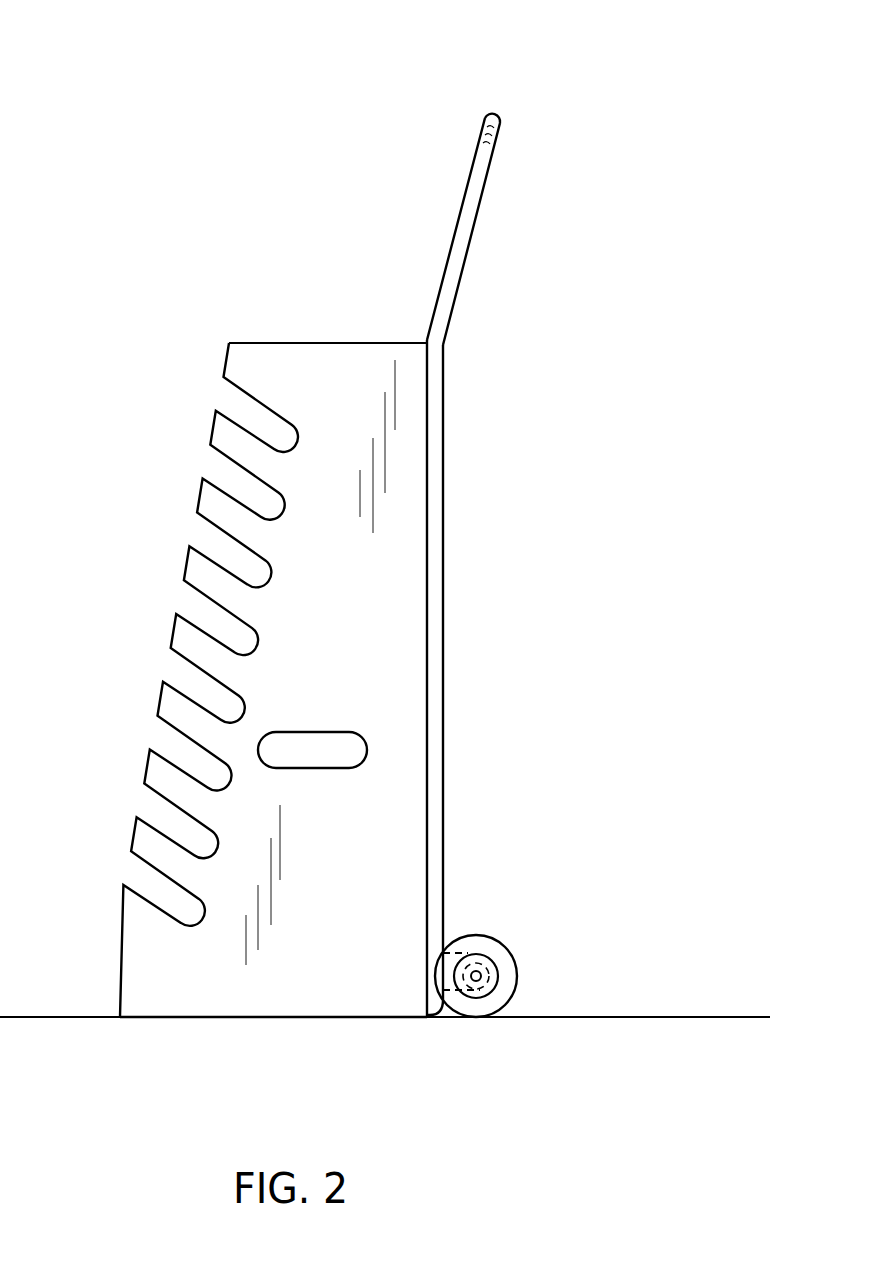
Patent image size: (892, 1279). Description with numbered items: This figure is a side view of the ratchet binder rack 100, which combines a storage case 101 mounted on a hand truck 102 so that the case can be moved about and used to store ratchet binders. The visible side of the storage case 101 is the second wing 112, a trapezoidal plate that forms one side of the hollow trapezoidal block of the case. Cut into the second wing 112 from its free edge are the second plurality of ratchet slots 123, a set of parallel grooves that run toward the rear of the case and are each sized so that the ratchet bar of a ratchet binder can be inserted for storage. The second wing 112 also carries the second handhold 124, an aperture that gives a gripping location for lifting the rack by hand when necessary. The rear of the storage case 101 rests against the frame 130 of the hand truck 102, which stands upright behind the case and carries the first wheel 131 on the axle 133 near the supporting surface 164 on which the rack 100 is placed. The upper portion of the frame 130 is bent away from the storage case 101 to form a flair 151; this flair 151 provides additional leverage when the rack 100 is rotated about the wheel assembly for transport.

The ratchet binder rack 100 is at (204, 88).
The storage case 101 is at (315, 343).
The hand truck 102 is at (500, 122).
The second wing 112 is at (347, 977).
The second plurality of ratchet slots 123 is at (290, 448).
The second handhold 124 is at (337, 732).
The frame 130 is at (443, 403).
The first wheel 131 is at (515, 978).
The axle 133 is at (476, 972).
The flair 151 is at (472, 235).
The supporting surface 164 is at (567, 1018).